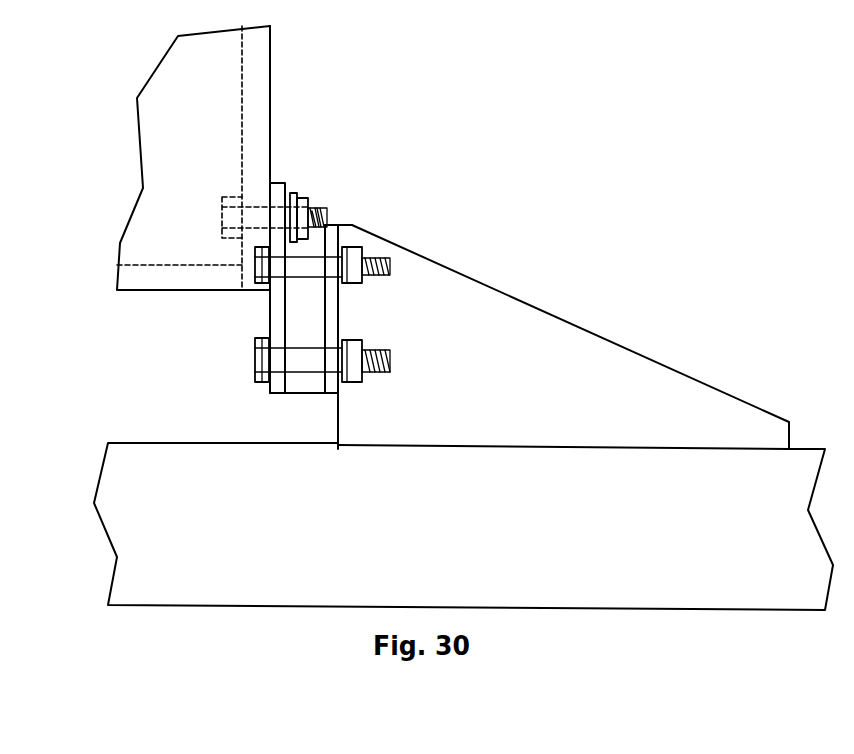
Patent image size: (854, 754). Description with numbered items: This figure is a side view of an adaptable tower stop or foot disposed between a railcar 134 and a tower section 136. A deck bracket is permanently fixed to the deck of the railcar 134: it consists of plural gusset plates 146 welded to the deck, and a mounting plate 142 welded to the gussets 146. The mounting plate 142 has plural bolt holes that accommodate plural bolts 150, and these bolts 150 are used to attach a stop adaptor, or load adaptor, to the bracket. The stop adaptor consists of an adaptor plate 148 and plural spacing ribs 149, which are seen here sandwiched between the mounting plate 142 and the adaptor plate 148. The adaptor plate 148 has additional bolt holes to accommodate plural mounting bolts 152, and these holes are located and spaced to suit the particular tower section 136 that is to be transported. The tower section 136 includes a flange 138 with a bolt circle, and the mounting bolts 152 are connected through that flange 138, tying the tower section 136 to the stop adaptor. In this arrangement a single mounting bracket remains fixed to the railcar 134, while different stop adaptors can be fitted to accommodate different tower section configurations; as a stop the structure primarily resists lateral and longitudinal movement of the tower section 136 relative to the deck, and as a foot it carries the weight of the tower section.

The railcar 134 is at (113, 552).
The tower section 136 is at (143, 188).
The flange 138 is at (242, 118).
The mounting plate 142 is at (340, 315).
The gusset plates 146 is at (630, 350).
The adaptor plate 148 is at (268, 308).
The spacing ribs 149 is at (308, 393).
The bolts 150 is at (378, 258).
The mounting bolts 152 is at (308, 197).